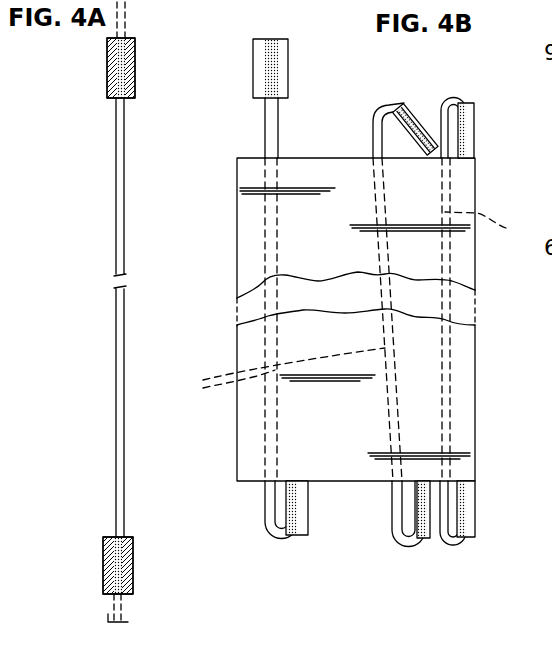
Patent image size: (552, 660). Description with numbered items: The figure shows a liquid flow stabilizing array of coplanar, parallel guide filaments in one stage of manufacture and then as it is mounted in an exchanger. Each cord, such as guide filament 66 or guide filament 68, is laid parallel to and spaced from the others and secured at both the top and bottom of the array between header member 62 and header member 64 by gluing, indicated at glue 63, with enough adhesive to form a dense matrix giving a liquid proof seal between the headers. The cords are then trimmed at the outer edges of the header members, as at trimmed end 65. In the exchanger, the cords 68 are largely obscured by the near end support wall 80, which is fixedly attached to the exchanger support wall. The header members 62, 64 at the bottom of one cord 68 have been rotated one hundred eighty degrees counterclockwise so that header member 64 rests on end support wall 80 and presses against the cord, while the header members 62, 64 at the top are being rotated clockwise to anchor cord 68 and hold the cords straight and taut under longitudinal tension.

In FIG. 4A, the header member 62 is at (134, 72).
In FIG. 4B, the header member 62 is at (284, 88).
In FIG. 4A, the glue 63 is at (124, 102).
In FIG. 4B, the glue 63 is at (270, 68).
In FIG. 4A, the header member 64 is at (107, 78).
In FIG. 4B, the header member 64 is at (253, 62).
In FIG. 4A, the trimmed cord end 65 is at (126, 36).
In FIG. 4B, the trimmed cord end 65 is at (268, 38).
In FIG. 4A, the guide filament 66 is at (124, 243).
In FIG. 4B, the guide filament 68 is at (354, 303).
In FIG. 4B, the near end support wall 80 is at (326, 242).